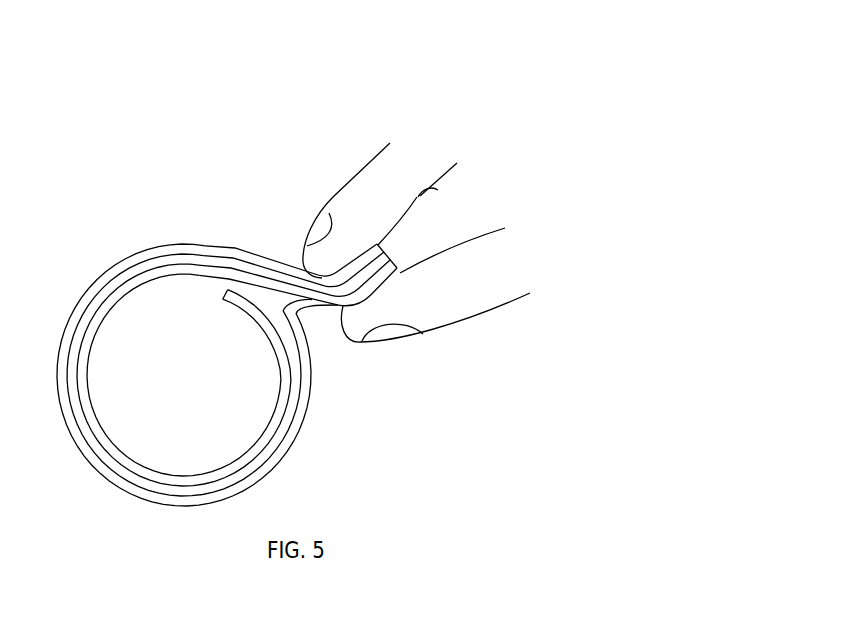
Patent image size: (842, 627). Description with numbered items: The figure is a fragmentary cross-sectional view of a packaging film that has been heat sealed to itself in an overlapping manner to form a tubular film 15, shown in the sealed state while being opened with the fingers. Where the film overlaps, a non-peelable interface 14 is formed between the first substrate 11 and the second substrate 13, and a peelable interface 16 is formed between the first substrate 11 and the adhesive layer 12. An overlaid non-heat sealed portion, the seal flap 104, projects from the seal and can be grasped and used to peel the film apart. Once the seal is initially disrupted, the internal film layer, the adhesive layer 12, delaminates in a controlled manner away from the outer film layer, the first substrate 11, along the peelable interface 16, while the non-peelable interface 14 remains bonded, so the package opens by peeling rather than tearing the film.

The first substrate 11 is at (229, 290).
The adhesive layer 12 is at (222, 299).
The second substrate 13 is at (266, 340).
The non-peelable interface 14 is at (271, 274).
The tubular film 15 is at (333, 100).
The peelable interface 16 is at (296, 313).
The seal flap 104 is at (406, 240).